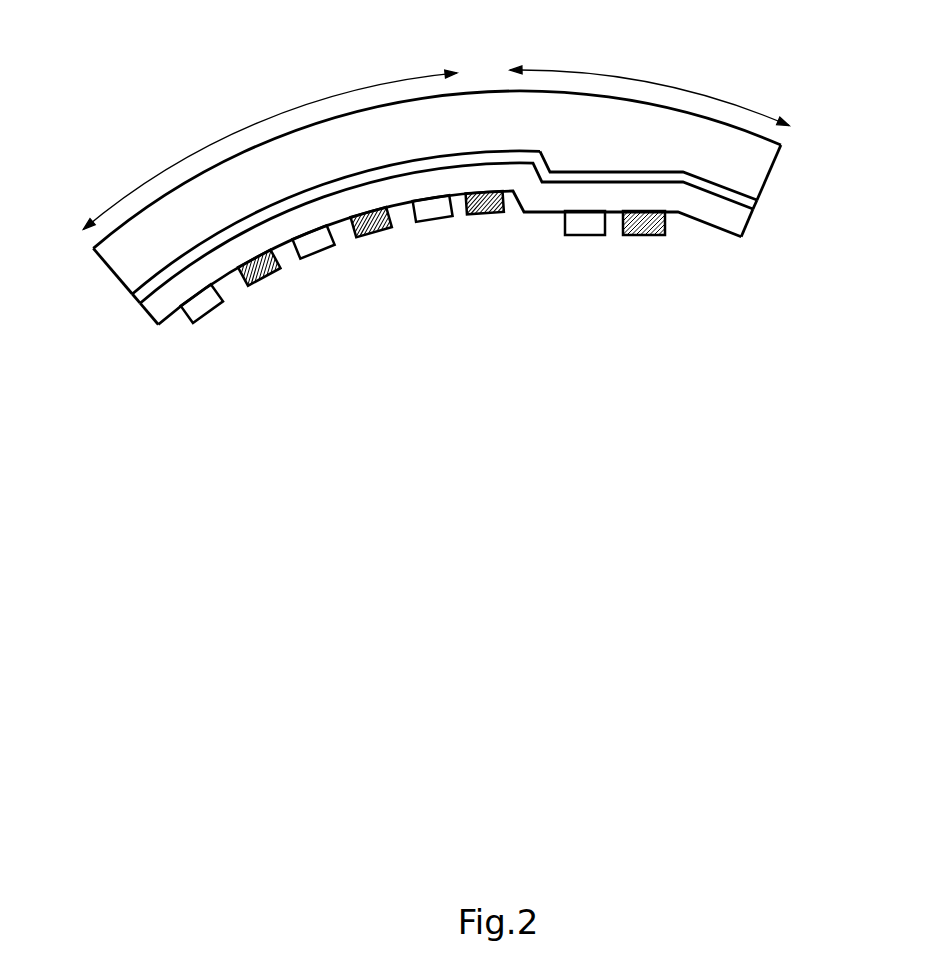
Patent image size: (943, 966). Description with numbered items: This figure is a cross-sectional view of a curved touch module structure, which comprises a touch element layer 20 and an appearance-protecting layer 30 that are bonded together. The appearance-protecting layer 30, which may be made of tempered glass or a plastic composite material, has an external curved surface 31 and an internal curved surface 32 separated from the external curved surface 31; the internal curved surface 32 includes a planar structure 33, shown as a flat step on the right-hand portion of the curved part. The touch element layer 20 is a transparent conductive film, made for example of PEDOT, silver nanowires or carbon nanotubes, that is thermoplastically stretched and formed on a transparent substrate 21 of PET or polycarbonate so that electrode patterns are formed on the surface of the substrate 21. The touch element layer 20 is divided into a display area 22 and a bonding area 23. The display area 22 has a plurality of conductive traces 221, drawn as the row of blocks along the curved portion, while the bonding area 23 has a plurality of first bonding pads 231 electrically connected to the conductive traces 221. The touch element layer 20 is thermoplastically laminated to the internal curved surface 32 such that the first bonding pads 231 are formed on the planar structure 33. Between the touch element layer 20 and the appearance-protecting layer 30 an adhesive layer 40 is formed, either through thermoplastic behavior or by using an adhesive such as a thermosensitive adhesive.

The touch element layer 20 is at (406, 315).
The transparent substrate 21 is at (153, 307).
The display area 22 is at (328, 315).
The conductive traces 221 is at (188, 362).
The bonding area 23 is at (667, 280).
The first bonding pads 231 is at (670, 226).
The appearance-protecting layer 30 is at (436, 158).
The external curved surface 31 is at (778, 140).
The internal curved surface 32 is at (722, 186).
The planar structure 33 is at (614, 183).
The adhesive layer 40 is at (760, 208).